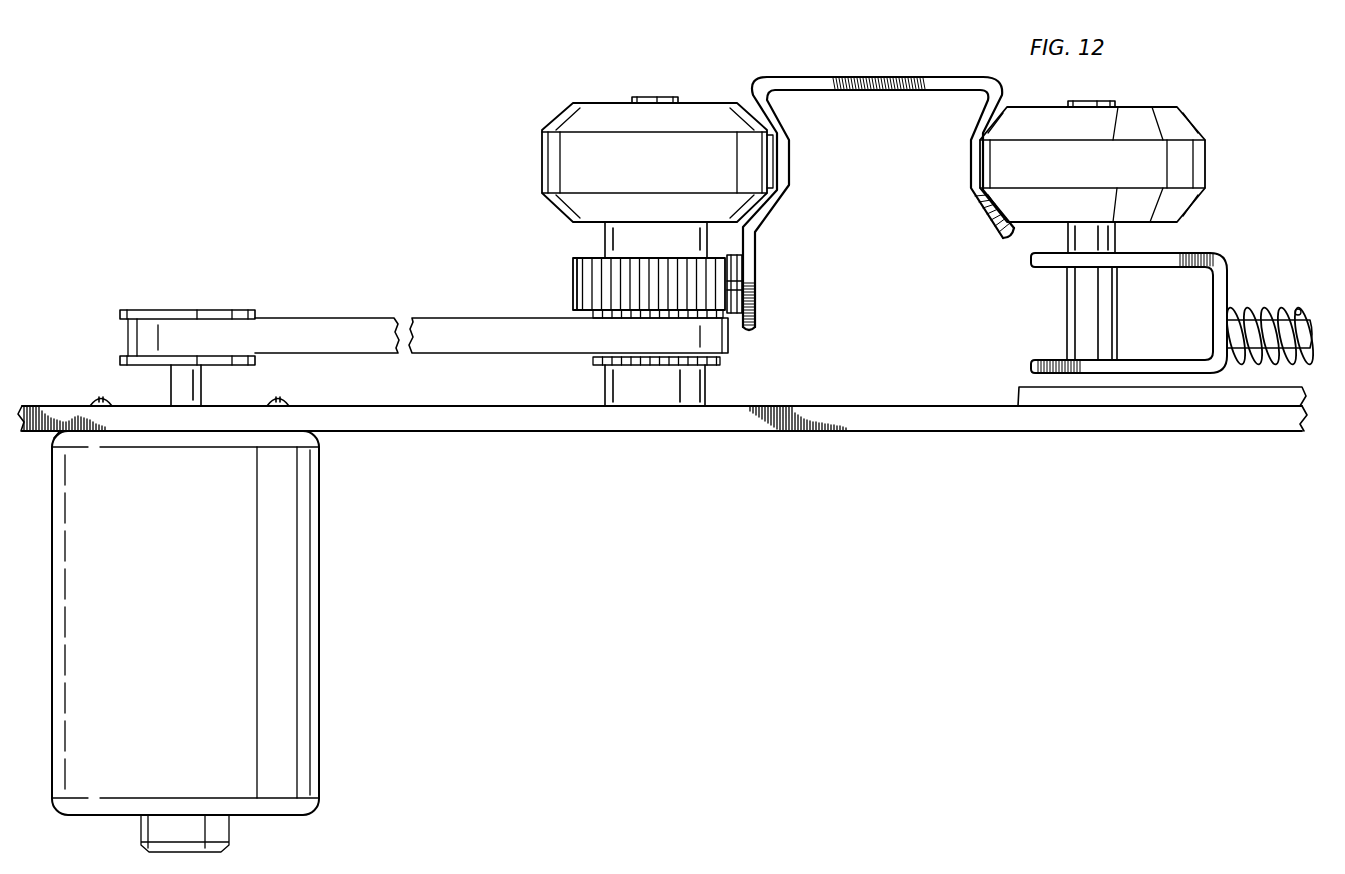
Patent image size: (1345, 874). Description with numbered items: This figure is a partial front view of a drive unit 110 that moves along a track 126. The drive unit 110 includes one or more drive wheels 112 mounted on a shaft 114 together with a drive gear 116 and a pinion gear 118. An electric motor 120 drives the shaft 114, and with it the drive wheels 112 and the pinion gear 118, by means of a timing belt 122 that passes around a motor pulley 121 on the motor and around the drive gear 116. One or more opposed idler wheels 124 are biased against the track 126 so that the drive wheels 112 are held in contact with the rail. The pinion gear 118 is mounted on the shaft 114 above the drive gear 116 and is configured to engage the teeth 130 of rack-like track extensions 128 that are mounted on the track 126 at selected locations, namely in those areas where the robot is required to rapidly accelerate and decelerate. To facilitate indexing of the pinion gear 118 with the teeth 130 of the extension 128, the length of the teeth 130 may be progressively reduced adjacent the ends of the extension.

The drive unit 110 is at (310, 112).
The drive wheels 112 is at (541, 162).
The shaft 114 is at (651, 95).
The drive gear 116 is at (696, 368).
The pinion gear 118 is at (573, 282).
The electric motor 120 is at (205, 637).
The motor pulley 121 is at (160, 310).
The timing belt 122 is at (333, 318).
The idler wheels 124 is at (1207, 166).
The track 126 is at (899, 77).
The rack-like track extensions 128 is at (733, 249).
The teeth 130 is at (727, 290).